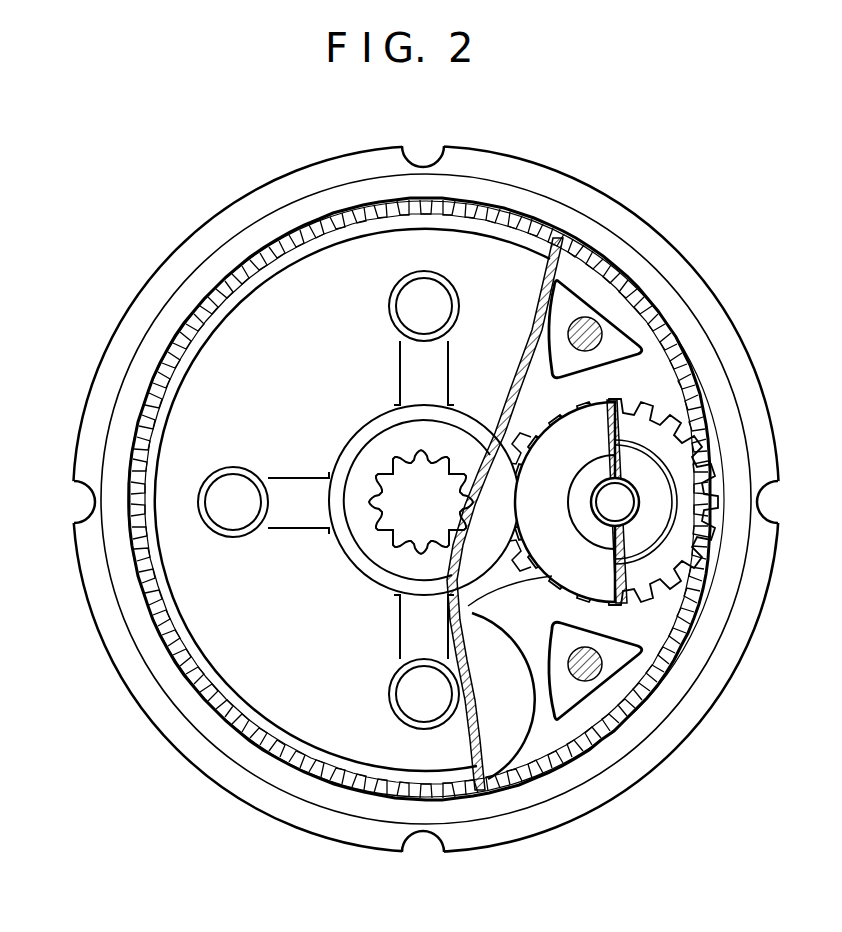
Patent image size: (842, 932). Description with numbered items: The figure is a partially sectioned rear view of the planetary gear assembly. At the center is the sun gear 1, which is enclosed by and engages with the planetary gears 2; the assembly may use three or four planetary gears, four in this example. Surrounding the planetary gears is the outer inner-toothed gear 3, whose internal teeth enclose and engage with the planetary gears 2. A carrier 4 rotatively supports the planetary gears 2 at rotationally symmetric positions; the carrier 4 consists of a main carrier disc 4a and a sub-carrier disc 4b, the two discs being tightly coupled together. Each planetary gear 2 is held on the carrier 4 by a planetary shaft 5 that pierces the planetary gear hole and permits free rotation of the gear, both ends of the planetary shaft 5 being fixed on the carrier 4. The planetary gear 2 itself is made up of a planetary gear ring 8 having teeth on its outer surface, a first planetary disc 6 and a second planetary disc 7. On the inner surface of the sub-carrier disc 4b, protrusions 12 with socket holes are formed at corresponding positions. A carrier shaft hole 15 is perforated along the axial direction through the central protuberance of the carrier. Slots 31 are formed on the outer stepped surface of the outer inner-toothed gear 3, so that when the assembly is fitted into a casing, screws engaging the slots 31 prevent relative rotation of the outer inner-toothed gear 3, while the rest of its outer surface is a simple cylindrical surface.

The sun gear 1 is at (495, 523).
The planetary gear 2 is at (427, 206).
The outer inner-toothed gear 3 is at (303, 210).
The carrier 4 is at (282, 323).
The main carrier disc 4a is at (427, 795).
The sub-carrier disc 4b is at (507, 795).
The planetary shaft 5 is at (615, 502).
The first planetary disc 6 is at (637, 468).
The second planetary disc 7 is at (653, 470).
The planetary gear ring 8 is at (680, 492).
The protrusion 12 is at (605, 675).
The carrier shaft hole 15 is at (433, 452).
The slot 31 is at (92, 502).